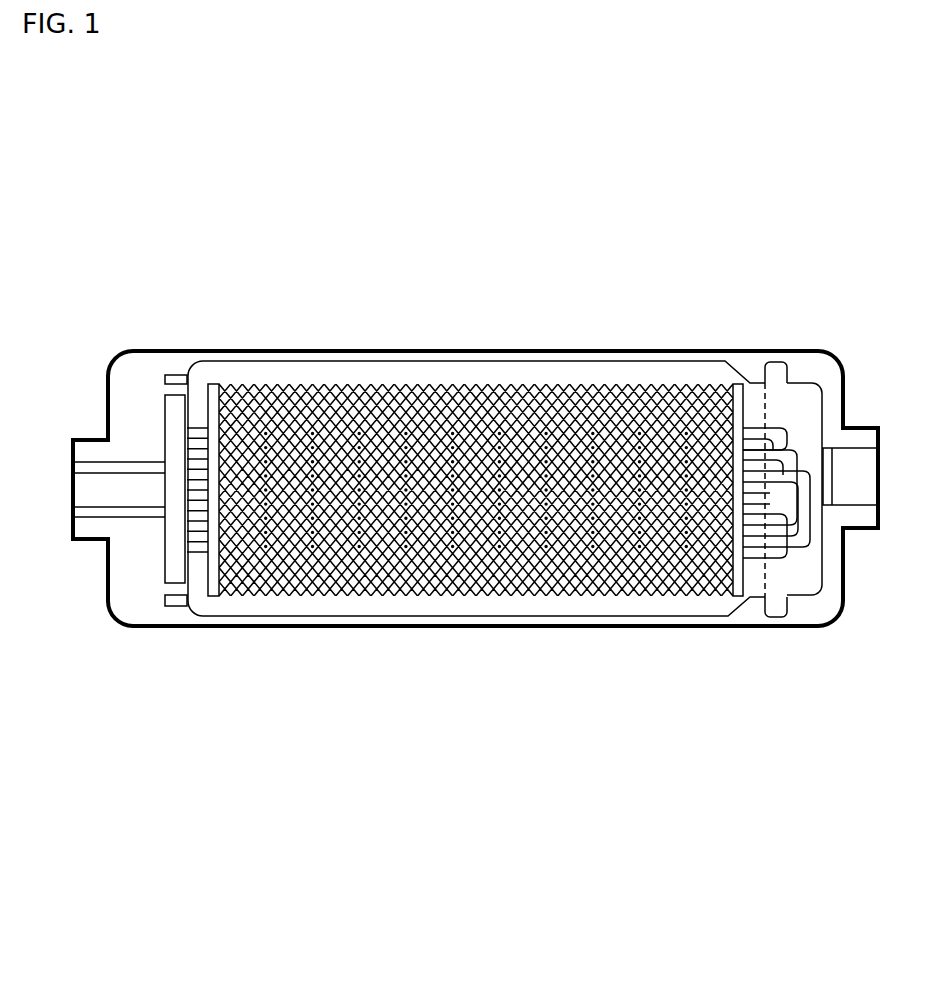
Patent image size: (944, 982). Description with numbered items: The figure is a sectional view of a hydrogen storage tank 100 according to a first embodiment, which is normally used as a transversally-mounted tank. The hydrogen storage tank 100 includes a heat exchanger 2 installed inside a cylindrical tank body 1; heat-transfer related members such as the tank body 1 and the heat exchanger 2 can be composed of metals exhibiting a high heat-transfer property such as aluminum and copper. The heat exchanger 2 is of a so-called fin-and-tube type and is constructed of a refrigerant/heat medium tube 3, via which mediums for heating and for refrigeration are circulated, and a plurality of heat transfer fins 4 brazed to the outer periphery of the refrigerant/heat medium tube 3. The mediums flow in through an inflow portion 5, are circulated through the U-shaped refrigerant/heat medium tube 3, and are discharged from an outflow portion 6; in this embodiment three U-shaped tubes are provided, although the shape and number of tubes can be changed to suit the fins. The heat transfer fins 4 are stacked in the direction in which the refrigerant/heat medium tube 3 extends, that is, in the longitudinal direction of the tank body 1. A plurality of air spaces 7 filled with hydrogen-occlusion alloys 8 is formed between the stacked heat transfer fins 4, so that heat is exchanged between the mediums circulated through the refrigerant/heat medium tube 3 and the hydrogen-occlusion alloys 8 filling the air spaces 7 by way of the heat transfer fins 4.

The hydrogen storage tank 100 is at (680, 308).
The tank body 1 is at (430, 349).
The heat exchanger 2 is at (802, 709).
The refrigerant/heat medium tube 3 is at (787, 617).
The heat transfer fins 4 is at (677, 598).
The inflow portion 5 is at (146, 485).
The outflow portion 6 is at (146, 485).
The air spaces 7 is at (358, 572).
The hydrogen-occlusion alloys 8 is at (302, 572).